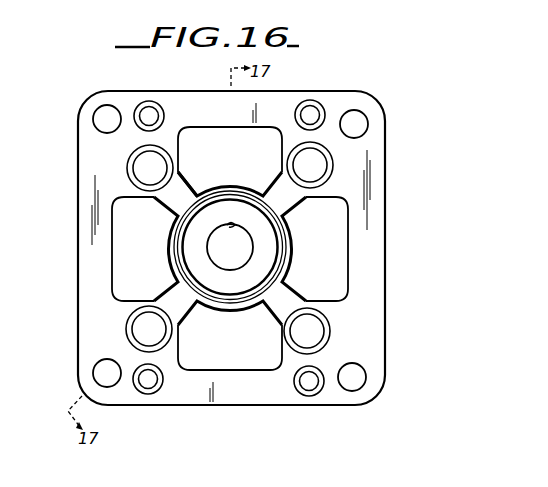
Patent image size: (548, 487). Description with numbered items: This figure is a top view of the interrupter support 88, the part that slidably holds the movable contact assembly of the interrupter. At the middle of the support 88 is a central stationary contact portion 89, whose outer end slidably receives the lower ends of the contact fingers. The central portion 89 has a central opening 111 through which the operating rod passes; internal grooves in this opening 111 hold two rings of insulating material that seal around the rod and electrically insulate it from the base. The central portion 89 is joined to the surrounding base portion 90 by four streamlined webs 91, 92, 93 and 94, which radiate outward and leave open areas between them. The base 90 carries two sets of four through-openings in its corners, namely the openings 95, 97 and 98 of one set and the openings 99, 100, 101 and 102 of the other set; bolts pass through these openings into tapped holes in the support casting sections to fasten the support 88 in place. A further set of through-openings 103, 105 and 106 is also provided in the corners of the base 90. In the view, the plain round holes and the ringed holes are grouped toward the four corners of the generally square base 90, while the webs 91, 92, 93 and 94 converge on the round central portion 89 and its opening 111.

The interrupter support 88 is at (73, 279).
The central stationary contact portion 89 is at (262, 256).
The base portion 90 is at (237, 398).
The streamlined web 91 is at (181, 193).
The streamlined web 92 is at (275, 193).
The streamlined web 93 is at (272, 294).
The streamlined web 94 is at (180, 293).
The through-opening 95 is at (97, 123).
The through-opening 97 is at (363, 380).
The through-opening 98 is at (97, 368).
The through-opening 99 is at (148, 107).
The through-opening 100 is at (311, 107).
The through-opening 101 is at (309, 388).
The through-opening 102 is at (155, 387).
The through-opening 103 is at (153, 157).
The through-opening 105 is at (318, 335).
The through-opening 106 is at (157, 338).
The central opening 111 is at (241, 218).